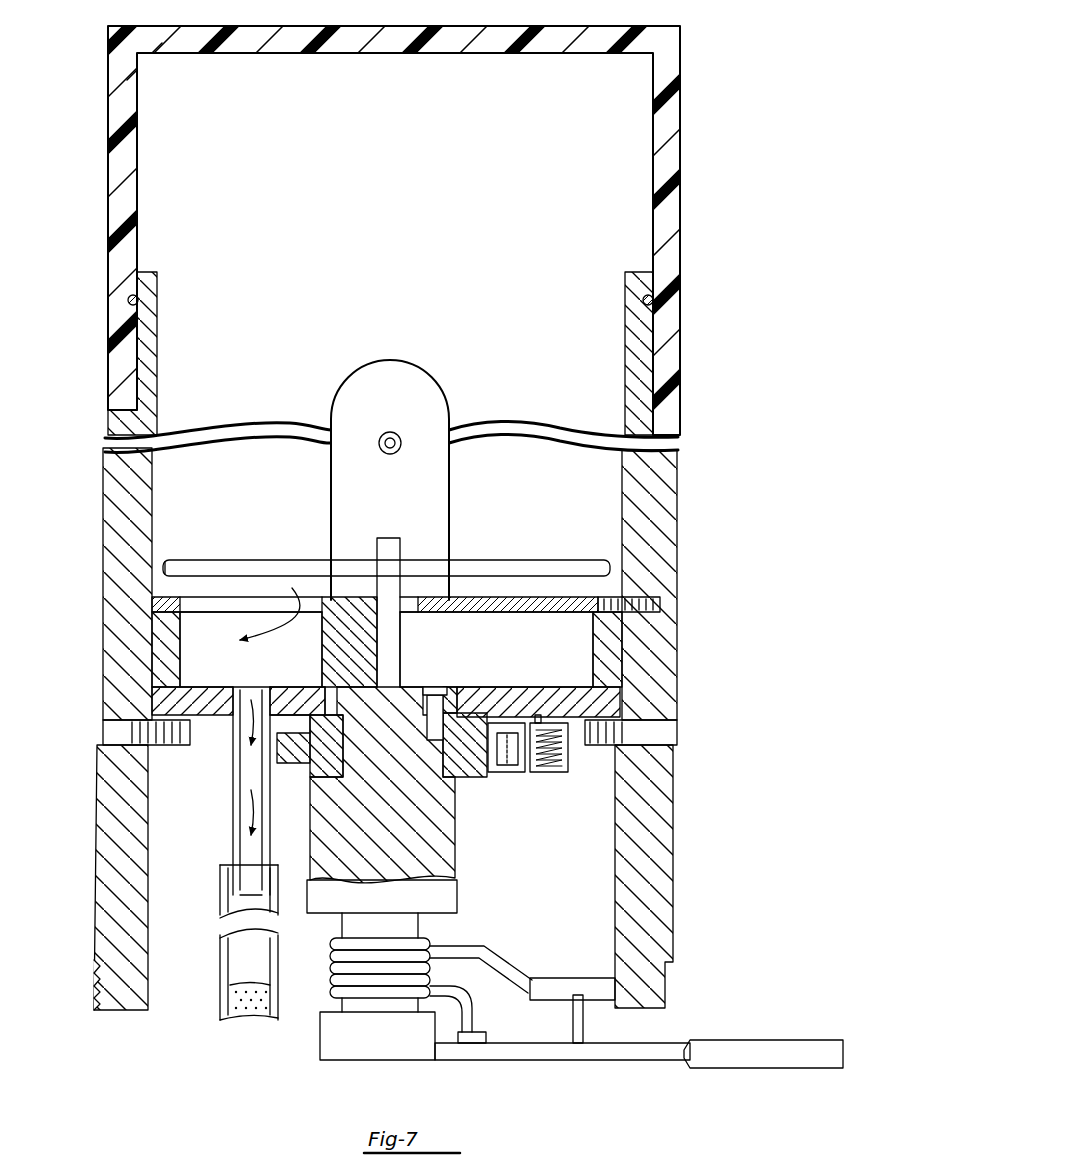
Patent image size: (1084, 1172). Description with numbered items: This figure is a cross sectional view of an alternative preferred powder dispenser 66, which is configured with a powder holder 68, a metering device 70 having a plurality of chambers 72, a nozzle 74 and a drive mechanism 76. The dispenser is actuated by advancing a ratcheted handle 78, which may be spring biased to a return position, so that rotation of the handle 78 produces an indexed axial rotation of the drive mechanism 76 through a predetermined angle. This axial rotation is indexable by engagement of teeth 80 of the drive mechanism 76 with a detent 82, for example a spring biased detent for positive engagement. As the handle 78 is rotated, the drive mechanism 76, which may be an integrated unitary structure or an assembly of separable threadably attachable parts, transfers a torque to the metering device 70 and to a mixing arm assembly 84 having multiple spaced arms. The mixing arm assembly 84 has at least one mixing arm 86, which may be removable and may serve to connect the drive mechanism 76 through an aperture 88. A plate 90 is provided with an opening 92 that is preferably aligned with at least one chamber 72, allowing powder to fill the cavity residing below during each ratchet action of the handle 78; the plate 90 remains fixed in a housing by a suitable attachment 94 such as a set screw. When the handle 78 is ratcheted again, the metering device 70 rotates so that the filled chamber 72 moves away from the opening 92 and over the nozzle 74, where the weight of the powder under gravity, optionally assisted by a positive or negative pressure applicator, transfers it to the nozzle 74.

The powder dispenser 66 is at (766, 398).
The powder holder 68 is at (678, 560).
The metering device 70 is at (604, 668).
The chambers 72 is at (294, 648).
The nozzle 74 is at (242, 688).
The drive mechanism 76 is at (548, 903).
The ratcheted handle 78 is at (756, 1052).
The teeth 80 is at (300, 752).
The detent 82 is at (515, 772).
The mixing arm assembly 84 is at (416, 376).
The mixing arm 86 is at (402, 445).
The aperture 88 is at (383, 540).
The plate 90 is at (177, 598).
The opening 92 is at (247, 607).
The attachment 94 is at (664, 605).